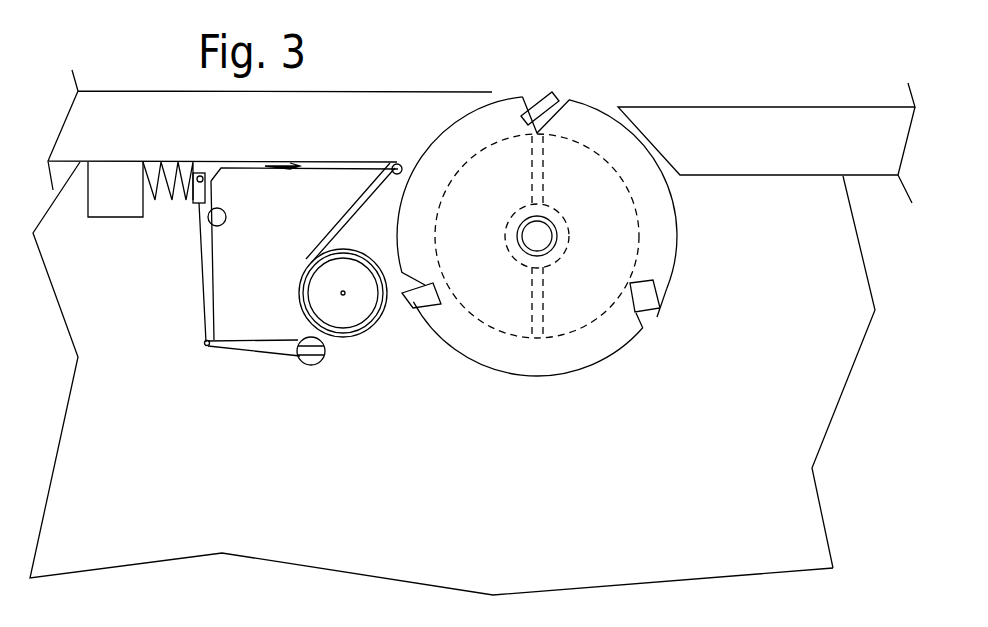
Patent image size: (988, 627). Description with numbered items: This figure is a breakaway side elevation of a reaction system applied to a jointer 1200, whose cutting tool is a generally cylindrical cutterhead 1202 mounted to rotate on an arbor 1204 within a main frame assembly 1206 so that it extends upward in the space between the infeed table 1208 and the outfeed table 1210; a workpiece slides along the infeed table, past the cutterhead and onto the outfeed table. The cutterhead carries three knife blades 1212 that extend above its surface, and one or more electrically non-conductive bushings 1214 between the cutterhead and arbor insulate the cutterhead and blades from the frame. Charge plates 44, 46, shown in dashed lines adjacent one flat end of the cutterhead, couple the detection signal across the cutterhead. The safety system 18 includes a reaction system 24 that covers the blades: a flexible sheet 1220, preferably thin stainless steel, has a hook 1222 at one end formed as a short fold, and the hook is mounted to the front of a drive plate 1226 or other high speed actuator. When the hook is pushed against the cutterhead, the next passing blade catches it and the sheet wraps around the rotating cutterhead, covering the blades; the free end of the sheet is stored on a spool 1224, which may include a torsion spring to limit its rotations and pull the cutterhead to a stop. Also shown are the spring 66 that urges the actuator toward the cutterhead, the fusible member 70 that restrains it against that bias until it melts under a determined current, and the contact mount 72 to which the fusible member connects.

The safety system 18 is at (213, 448).
The reaction system 24 is at (433, 442).
The charge plate 44 is at (505, 332).
The charge plate 46 is at (565, 332).
The spring 66 is at (165, 203).
The fusible member 70 is at (270, 357).
The contact mount 72 is at (315, 360).
The jointer 1200 is at (717, 86).
The cutterhead 1202 is at (680, 245).
The arbor 1204 is at (518, 243).
The main frame assembly 1206 is at (730, 485).
The infeed table 1208 is at (800, 152).
The outfeed table 1210 is at (150, 138).
The knife blade 1212 is at (658, 315).
The electrically non-conductive bushing 1214 is at (553, 248).
The flexible sheet 1220 is at (338, 225).
The hook 1222 is at (402, 163).
The spool 1224 is at (367, 320).
The drive plate 1226 is at (250, 167).